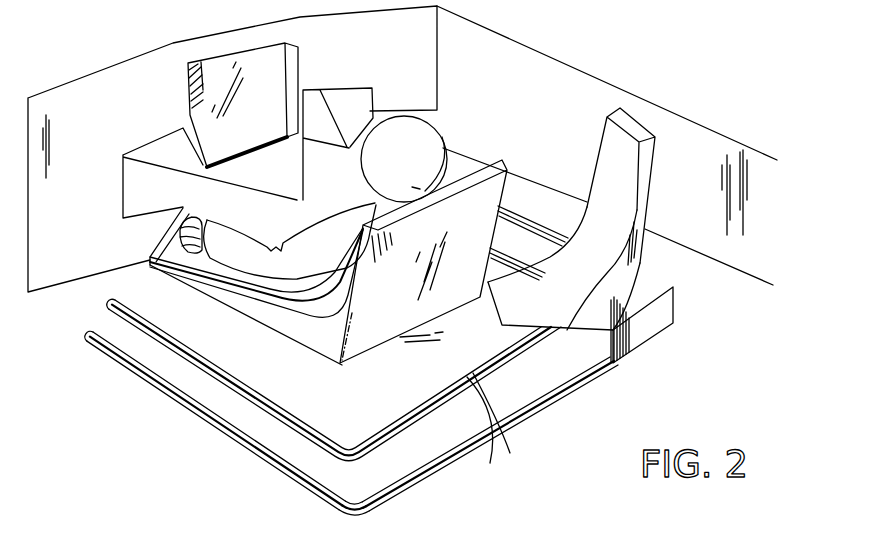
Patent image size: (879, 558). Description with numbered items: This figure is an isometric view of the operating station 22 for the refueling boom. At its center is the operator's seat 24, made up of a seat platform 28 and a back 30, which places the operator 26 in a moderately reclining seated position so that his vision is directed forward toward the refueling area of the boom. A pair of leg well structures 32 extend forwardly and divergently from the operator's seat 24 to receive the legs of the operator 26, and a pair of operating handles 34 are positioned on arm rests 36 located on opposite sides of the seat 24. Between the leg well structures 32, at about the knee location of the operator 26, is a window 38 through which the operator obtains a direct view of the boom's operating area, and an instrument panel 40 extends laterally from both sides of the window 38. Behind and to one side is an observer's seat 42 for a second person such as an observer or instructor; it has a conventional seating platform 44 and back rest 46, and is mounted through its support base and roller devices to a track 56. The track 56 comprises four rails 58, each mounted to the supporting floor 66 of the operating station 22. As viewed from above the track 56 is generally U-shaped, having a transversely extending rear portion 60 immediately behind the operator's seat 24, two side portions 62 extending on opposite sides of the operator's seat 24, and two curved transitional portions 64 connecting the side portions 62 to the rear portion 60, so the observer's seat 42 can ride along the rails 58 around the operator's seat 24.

The operating station 22 is at (764, 184).
The operator's seat 24 is at (250, 324).
The operator 26 is at (430, 136).
The seat platform 28 is at (285, 339).
The back 30 is at (459, 286).
The leg well structures 32 is at (147, 142).
The operating handles 34 is at (194, 217).
The arm rests 36 is at (245, 232).
The window 38 is at (210, 58).
The instrument panel 40 is at (94, 67).
The observer's seat 42 is at (657, 178).
The seating platform 44 is at (571, 320).
The back rest 46 is at (641, 214).
The track 56 is at (530, 424).
The rails 58 is at (497, 430).
The rear portion 60 is at (594, 383).
The side portions 62 is at (222, 446).
The curved transitional portions 64 is at (394, 505).
The supporting floor 66 is at (393, 402).